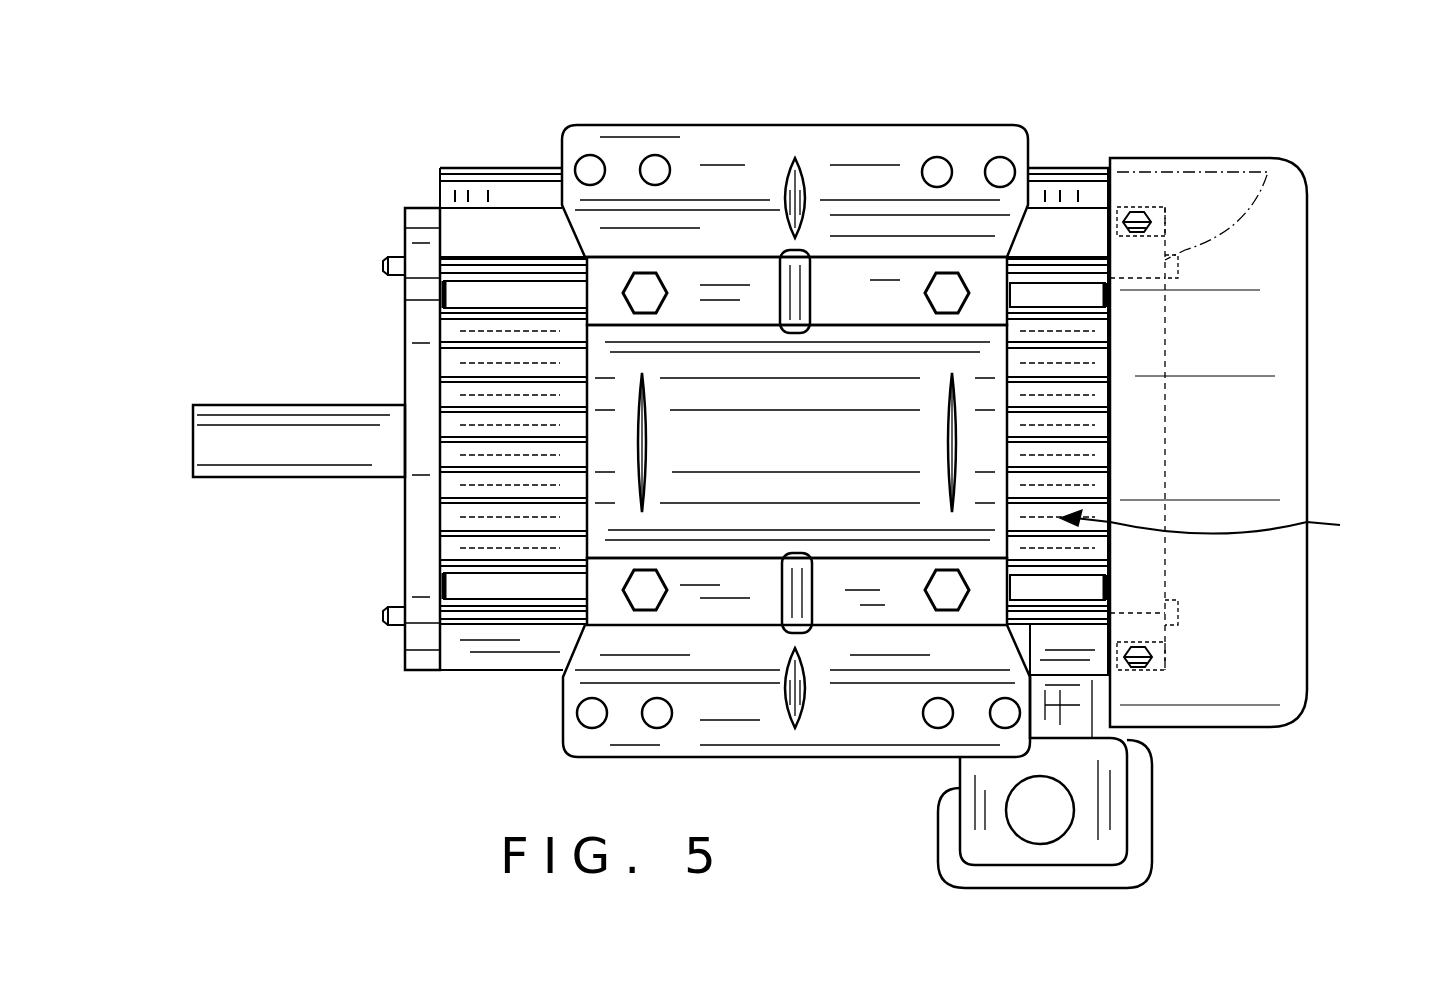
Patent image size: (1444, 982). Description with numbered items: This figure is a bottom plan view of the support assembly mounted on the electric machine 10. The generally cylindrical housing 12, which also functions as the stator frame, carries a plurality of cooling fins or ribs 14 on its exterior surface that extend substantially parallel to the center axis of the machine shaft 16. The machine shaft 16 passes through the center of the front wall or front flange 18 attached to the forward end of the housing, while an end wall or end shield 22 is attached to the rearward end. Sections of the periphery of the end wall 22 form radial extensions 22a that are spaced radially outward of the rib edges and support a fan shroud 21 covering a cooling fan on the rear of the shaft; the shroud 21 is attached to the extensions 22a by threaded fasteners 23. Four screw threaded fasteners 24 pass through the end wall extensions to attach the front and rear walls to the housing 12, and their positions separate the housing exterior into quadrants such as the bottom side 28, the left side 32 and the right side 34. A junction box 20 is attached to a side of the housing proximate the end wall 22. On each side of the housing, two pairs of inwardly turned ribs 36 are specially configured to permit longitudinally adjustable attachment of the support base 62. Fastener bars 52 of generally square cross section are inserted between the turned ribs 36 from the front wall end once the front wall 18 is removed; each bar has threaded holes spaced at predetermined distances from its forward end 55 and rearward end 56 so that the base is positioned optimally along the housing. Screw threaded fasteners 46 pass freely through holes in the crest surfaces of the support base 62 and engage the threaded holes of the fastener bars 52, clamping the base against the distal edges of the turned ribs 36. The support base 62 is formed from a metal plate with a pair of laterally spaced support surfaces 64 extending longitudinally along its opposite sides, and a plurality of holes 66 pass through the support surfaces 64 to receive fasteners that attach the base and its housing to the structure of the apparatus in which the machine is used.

The electric machine 10 is at (1082, 152).
The housing 12 is at (465, 488).
The cooling fins or ribs 14 is at (468, 377).
The machine shaft 16 is at (190, 448).
The front wall or front flange 18 is at (405, 378).
The junction box 20 is at (1100, 847).
The fan shroud 21 is at (1225, 490).
The end wall or end shield 22 is at (1085, 265).
The radial extensions of the end wall 22a is at (1270, 165).
The threaded fasteners 23 is at (1140, 222).
The screw threaded fasteners 24 is at (388, 262).
The bottom surface or side 28 is at (1222, 522).
The left surface or side 32 is at (492, 697).
The right surface or side 34 is at (484, 154).
The inwardly turned ribs 36 is at (462, 270).
The screw threaded fasteners 46 is at (650, 293).
The fastener bars 52 is at (538, 295).
The forward end of the fastener bar 55 is at (445, 300).
The rearward end of the fastener bar 56 is at (1165, 280).
The support base 62 is at (980, 440).
The support surfaces 64 is at (778, 155).
The holes 66 is at (655, 165).